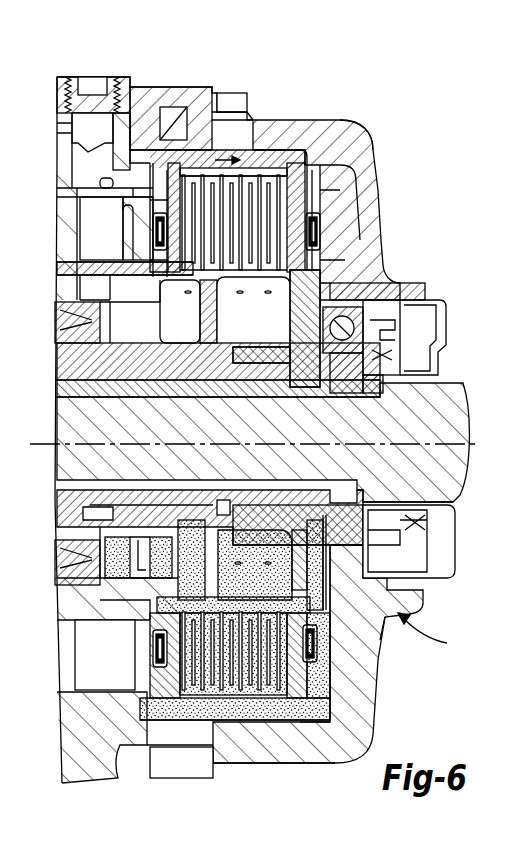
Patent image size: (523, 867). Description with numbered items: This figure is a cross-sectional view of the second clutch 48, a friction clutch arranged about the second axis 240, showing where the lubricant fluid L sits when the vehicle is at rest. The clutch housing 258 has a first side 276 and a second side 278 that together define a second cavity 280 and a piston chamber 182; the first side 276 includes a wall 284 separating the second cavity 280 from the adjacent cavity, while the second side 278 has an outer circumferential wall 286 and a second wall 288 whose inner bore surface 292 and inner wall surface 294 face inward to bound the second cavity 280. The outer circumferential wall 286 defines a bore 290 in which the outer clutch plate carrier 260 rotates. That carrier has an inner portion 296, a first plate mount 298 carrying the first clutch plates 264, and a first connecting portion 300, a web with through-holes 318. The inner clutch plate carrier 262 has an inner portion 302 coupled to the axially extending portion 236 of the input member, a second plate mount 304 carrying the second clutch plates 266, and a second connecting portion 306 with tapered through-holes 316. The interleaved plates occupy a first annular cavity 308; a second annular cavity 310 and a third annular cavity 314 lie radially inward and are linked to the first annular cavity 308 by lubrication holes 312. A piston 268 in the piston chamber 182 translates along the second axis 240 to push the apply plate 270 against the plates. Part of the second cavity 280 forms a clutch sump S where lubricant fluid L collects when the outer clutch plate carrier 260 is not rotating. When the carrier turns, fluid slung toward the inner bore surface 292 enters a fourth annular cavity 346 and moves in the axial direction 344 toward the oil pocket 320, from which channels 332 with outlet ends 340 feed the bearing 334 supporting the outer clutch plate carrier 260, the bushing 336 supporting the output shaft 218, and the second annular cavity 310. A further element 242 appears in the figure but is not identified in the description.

The second clutch 48 is at (431, 635).
The piston chamber 182 is at (95, 221).
The output shaft 218 is at (443, 472).
The axially extending portion 236 is at (72, 357).
The second axis 240 is at (40, 446).
The bearing 242 is at (63, 318).
The clutch housing 258 is at (381, 208).
The outer clutch plate carrier 260 is at (337, 237).
The inner clutch plate carrier 262 is at (227, 557).
The first clutch plates 264 is at (330, 162).
The second clutch plates 266 is at (160, 258).
The piston 268 is at (88, 195).
The apply plate 270 is at (157, 175).
The first side 276 is at (58, 112).
The second side 278 is at (338, 742).
The second cavity 280 is at (193, 777).
The wall 284 is at (77, 730).
The outer circumferential wall 286 is at (238, 140).
The second wall 288 is at (357, 677).
The bore 290 is at (262, 166).
The inner bore surface 292 is at (305, 130).
The inner wall surface 294 is at (330, 688).
The inner portion 296 is at (292, 345).
The first plate mount 298 is at (350, 128).
The first connecting portion 300 is at (318, 262).
The inner portion 302 is at (167, 493).
The second plate mount 304 is at (335, 283).
The second connecting portion 306 is at (213, 538).
The first annular cavity 308 is at (213, 710).
The second annular cavity 310 is at (353, 308).
The lubrication holes 312 is at (240, 290).
The third annular cavity 314 is at (183, 322).
The through-holes 316 is at (213, 332).
The through-holes 318 is at (305, 598).
The oil pocket 320 is at (330, 191).
The channels 332 is at (378, 283).
The bearing 334 is at (357, 342).
The bushing 336 is at (333, 400).
The outlet end 340 is at (365, 298).
The axial direction 344 is at (223, 157).
The fourth annular cavity 346 is at (246, 166).
The lubricant fluid L is at (335, 700).
The clutch sump S is at (318, 728).